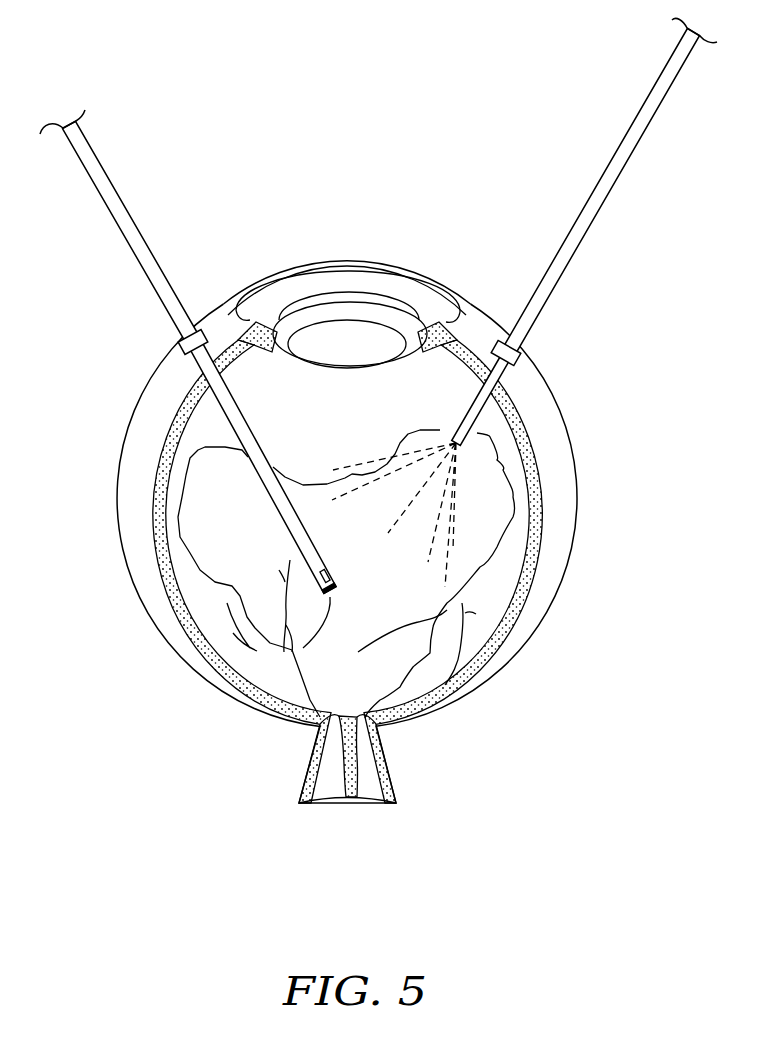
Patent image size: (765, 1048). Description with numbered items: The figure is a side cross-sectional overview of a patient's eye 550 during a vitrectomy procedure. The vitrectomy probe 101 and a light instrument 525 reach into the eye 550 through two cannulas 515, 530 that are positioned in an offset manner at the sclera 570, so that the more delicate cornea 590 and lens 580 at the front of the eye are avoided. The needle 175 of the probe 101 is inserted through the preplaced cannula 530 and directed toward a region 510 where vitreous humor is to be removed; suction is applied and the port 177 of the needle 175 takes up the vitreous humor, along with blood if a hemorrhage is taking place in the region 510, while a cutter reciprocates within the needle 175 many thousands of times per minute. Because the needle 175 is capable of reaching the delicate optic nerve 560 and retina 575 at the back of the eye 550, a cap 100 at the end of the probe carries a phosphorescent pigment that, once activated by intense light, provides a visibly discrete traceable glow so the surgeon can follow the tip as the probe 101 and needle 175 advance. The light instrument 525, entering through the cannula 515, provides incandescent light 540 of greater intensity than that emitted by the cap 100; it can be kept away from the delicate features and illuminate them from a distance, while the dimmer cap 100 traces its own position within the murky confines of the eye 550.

The cap 100 is at (295, 566).
The vitrectomy probe 101 is at (221, 451).
The needle 175 is at (157, 277).
The port 177 is at (361, 573).
The region 510 is at (497, 536).
The cannula 515 is at (520, 356).
The light instrument 525 is at (588, 182).
The cannula 530 is at (182, 352).
The incandescent light 540 is at (430, 503).
The eye 550 is at (332, 496).
The optic nerve 560 is at (360, 786).
The sclera 570 is at (118, 338).
The retina 575 is at (215, 628).
The lens 580 is at (375, 338).
The cornea 590 is at (355, 260).